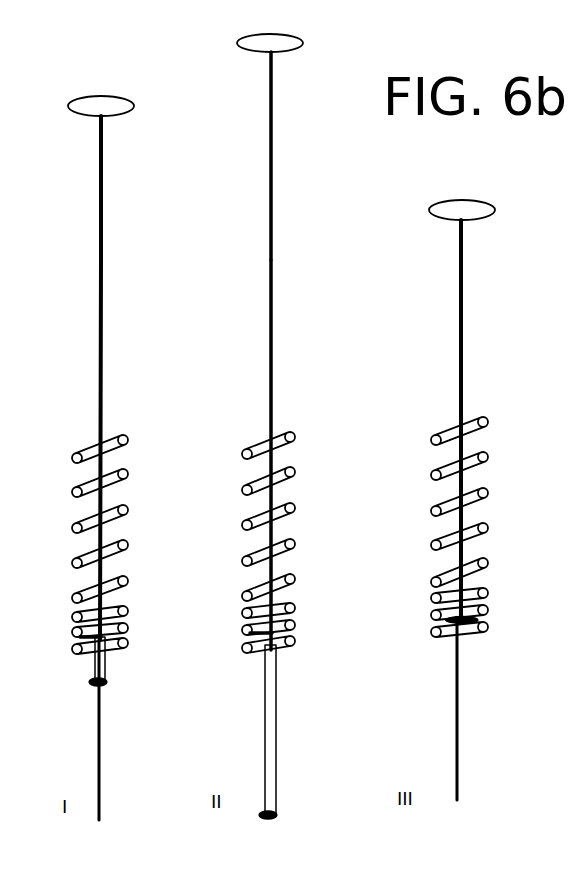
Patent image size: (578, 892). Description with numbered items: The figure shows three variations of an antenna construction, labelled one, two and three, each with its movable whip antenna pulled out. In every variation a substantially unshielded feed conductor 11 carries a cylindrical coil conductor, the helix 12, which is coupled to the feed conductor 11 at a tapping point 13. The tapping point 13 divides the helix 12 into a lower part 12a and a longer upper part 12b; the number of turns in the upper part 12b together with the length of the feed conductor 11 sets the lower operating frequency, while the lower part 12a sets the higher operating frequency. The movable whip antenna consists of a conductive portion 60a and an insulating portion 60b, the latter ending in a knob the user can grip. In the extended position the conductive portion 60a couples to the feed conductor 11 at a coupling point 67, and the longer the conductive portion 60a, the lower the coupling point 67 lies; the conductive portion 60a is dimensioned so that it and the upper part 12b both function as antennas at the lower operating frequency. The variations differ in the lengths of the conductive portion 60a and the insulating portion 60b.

The feed conductor 11 is at (98, 724).
The helix 12 is at (319, 534).
The lower part of the helix 12a is at (319, 607).
The upper part of the helix 12b is at (128, 473).
The tapping point 13 is at (78, 637).
The conductive portion 60a is at (103, 335).
The insulating portion 60b is at (103, 178).
The coupling point 67 is at (278, 813).